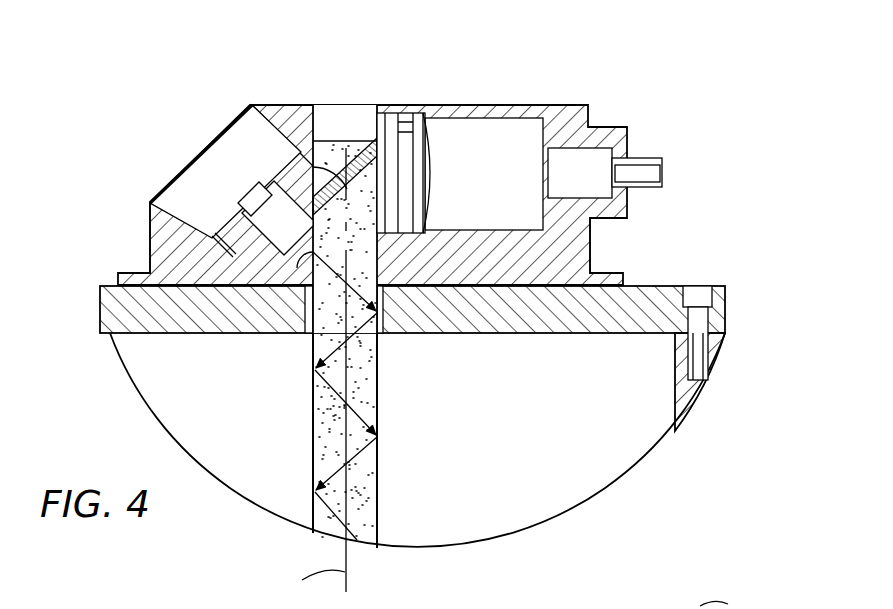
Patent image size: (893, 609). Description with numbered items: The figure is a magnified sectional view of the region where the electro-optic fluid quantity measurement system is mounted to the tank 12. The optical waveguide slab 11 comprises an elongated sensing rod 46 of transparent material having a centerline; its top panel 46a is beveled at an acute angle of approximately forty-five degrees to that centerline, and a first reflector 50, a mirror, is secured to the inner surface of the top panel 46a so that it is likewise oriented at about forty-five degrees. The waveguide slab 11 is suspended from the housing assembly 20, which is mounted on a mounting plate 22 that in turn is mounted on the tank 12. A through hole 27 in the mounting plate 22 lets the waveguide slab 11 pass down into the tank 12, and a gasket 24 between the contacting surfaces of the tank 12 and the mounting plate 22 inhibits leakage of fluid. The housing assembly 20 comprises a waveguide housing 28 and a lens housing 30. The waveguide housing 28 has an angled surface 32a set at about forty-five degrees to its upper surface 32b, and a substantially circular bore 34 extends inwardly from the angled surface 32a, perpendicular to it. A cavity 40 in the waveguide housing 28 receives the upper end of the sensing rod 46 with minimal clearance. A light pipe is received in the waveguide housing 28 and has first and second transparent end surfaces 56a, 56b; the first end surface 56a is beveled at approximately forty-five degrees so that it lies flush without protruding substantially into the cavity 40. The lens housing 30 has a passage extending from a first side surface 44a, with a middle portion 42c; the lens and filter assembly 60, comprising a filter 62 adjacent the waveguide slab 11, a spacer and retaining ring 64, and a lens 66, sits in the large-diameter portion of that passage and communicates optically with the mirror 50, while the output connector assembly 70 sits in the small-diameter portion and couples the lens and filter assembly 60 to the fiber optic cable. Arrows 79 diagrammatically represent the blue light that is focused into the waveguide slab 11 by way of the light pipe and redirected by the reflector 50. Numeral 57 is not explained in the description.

The housing assembly 20 is at (645, 97).
The lens housing 30 is at (567, 86).
The waveguide housing 28 is at (255, 86).
The angled surface 32a is at (278, 128).
The upper surface 32b is at (148, 203).
The bore 34 is at (237, 151).
The cavity 40 is at (342, 120).
The top panel 46a is at (355, 130).
The middle portion 42c is at (459, 127).
The filter 62 is at (383, 147).
The spacer and retaining ring 64 is at (405, 168).
The lens 66 is at (433, 188).
The lens and filter assembly 60 is at (450, 212).
The output connector assembly 70 is at (652, 207).
The first side surface 44a is at (591, 246).
The mounting plate 22 is at (657, 287).
The through hole 27 is at (310, 336).
The gasket 24 is at (668, 334).
The tank 12 is at (727, 335).
The optical waveguide slab 11 is at (392, 484).
The first reflector 50 is at (345, 348).
The first end surface 56a is at (344, 269).
The second end surface 56b is at (247, 193).
The reflected beam 57 is at (362, 368).
The arrows 79 is at (348, 408).
The sensing rod 46 is at (311, 463).